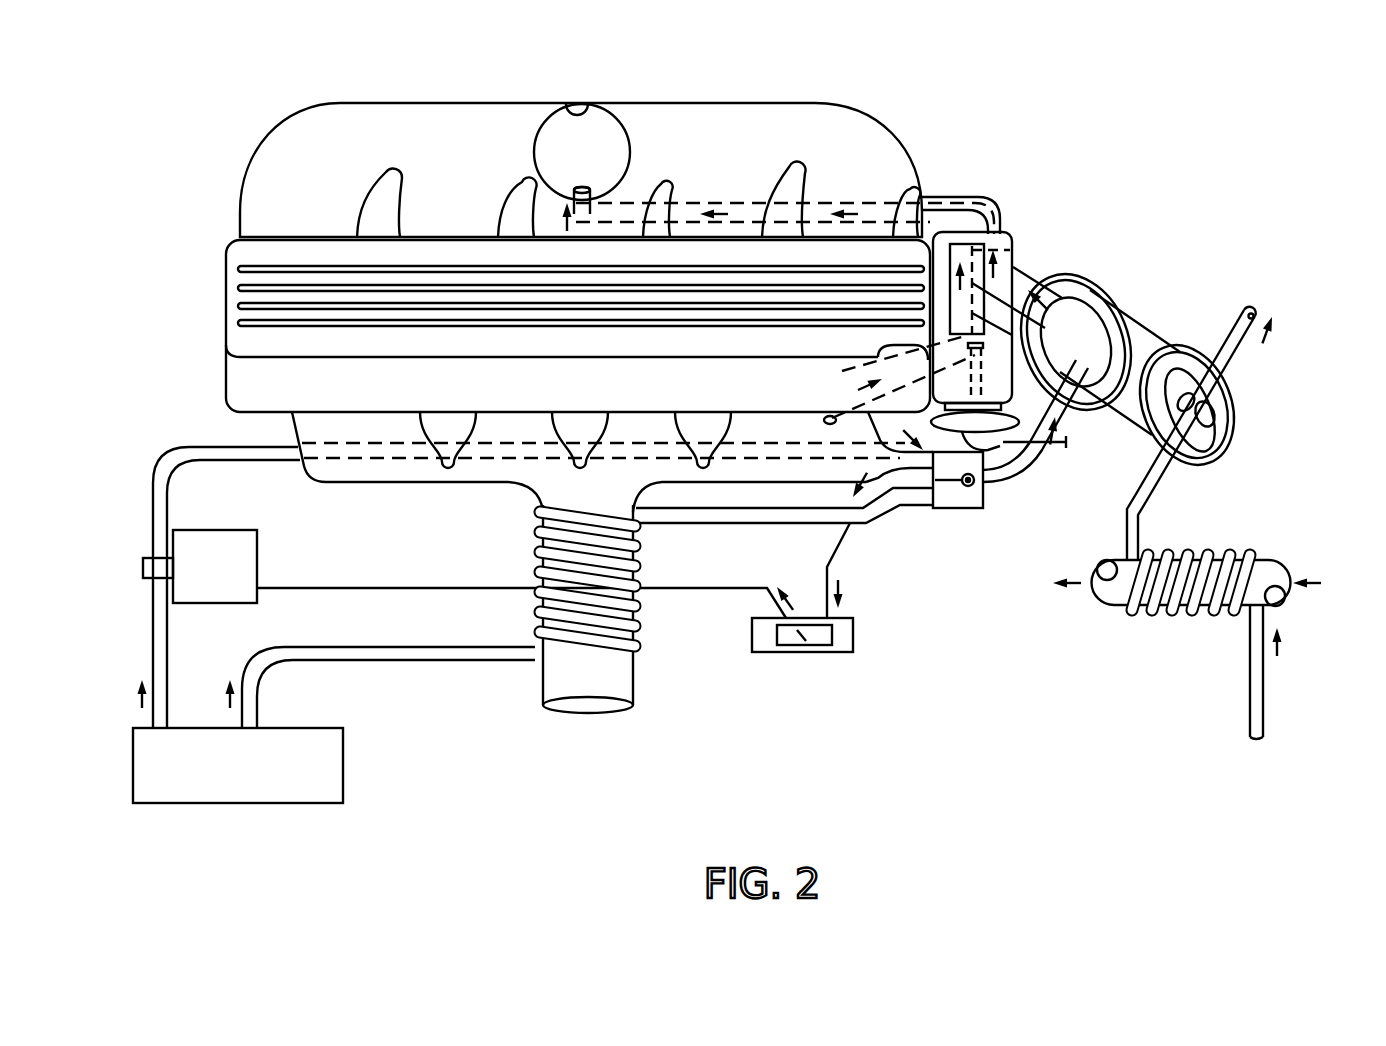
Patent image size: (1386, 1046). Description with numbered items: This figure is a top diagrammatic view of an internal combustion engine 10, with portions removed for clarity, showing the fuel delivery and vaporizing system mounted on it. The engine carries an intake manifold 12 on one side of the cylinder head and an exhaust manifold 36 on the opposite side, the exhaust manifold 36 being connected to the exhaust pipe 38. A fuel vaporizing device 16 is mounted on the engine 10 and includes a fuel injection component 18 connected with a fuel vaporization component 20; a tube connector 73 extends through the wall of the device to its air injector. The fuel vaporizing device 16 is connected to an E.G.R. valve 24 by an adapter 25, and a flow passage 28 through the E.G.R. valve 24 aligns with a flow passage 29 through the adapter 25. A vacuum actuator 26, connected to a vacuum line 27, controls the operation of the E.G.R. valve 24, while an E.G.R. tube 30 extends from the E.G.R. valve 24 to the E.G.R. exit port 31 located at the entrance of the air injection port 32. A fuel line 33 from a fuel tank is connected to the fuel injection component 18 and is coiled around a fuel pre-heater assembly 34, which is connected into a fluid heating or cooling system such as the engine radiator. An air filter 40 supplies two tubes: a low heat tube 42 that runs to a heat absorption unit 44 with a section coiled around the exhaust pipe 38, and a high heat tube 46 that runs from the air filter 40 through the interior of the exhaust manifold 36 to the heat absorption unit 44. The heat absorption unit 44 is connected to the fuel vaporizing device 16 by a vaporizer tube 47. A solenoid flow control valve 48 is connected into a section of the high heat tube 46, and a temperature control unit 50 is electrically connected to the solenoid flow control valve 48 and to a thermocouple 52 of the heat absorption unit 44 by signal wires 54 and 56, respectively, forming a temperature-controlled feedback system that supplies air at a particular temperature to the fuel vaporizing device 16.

The internal combustion engine 10 is at (650, 224).
The intake manifold 12 is at (648, 103).
The fuel vaporizing device 16 is at (1188, 409).
The fuel injection component 18 is at (1225, 415).
The fuel vaporization component 20 is at (1137, 342).
The E.G.R. valve 24 is at (957, 397).
The adapter 25 is at (1014, 264).
The vacuum actuator 26 is at (993, 432).
The vacuum line 27 is at (1068, 446).
The flow passage 28 is at (838, 371).
The flow passage 29 is at (1018, 242).
The E.G.R. tube 30 is at (938, 212).
The E.G.R. exit port 31 is at (578, 187).
The air injection port 32 is at (578, 106).
The fuel line 33 is at (1263, 720).
The fuel pre-heater assembly 34 is at (1270, 560).
The exhaust manifold 36 is at (467, 482).
The exhaust pipe 38 is at (612, 690).
The air filter 40 is at (345, 790).
The low heat tube 42 is at (380, 660).
The heat absorption unit 44 is at (962, 510).
The high heat tube 46 is at (270, 468).
The vaporizer tube 47 is at (1012, 478).
The solenoid flow control valve 48 is at (255, 560).
The temperature control unit 50 is at (822, 653).
The thermocouple 52 is at (990, 497).
The signal wire 54 is at (440, 590).
The signal wire 56 is at (840, 552).
The tube connector 73 is at (1128, 292).